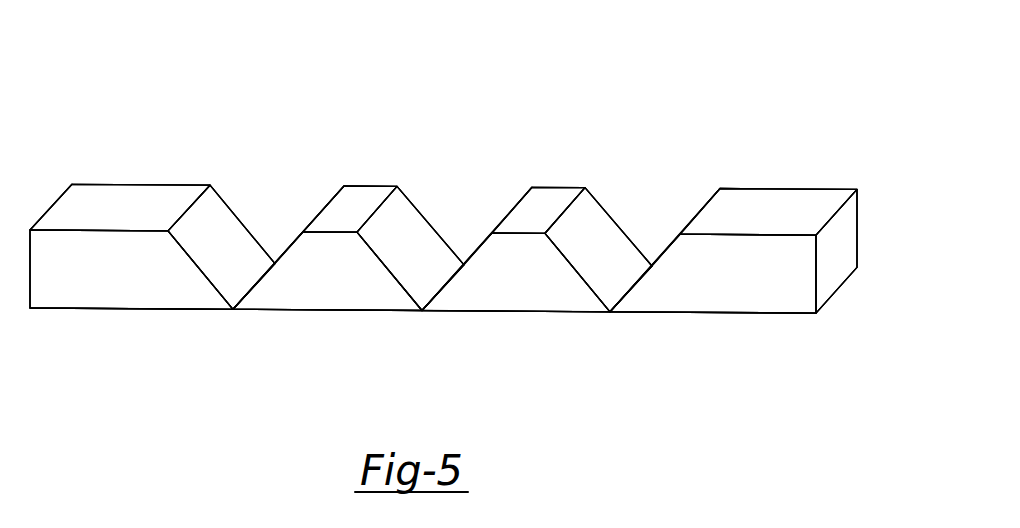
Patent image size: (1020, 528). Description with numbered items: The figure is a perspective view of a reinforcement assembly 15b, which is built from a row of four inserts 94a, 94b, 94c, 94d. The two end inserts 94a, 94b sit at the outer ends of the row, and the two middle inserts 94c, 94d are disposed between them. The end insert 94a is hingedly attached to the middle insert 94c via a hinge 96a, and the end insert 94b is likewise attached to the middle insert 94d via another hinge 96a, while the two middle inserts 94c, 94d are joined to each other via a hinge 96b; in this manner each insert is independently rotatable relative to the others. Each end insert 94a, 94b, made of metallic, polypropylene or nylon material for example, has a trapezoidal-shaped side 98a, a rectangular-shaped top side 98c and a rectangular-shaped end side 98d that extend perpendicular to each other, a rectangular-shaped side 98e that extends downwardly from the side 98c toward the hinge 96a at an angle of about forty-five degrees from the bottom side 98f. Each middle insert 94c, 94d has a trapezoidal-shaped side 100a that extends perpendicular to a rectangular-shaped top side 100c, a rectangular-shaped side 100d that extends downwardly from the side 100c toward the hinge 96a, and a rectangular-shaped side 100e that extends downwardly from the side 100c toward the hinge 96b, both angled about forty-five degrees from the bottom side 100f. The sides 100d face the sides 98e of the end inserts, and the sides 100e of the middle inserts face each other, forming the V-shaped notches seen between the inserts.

The reinforcement assembly 15b is at (610, 106).
The insert 94a is at (126, 160).
The insert 94b is at (762, 172).
The insert 94c is at (372, 160).
The insert 94d is at (550, 185).
The hinge 96a is at (232, 310).
The hinge 96b is at (422, 310).
The side 98a is at (68, 292).
The side 98c is at (80, 192).
The side 98d is at (833, 247).
The side 98e is at (234, 243).
The side 98f is at (155, 310).
The side 100a is at (312, 292).
The side 100c is at (345, 198).
The side 100d is at (588, 218).
The side 100e is at (417, 237).
The side 100f is at (367, 312).